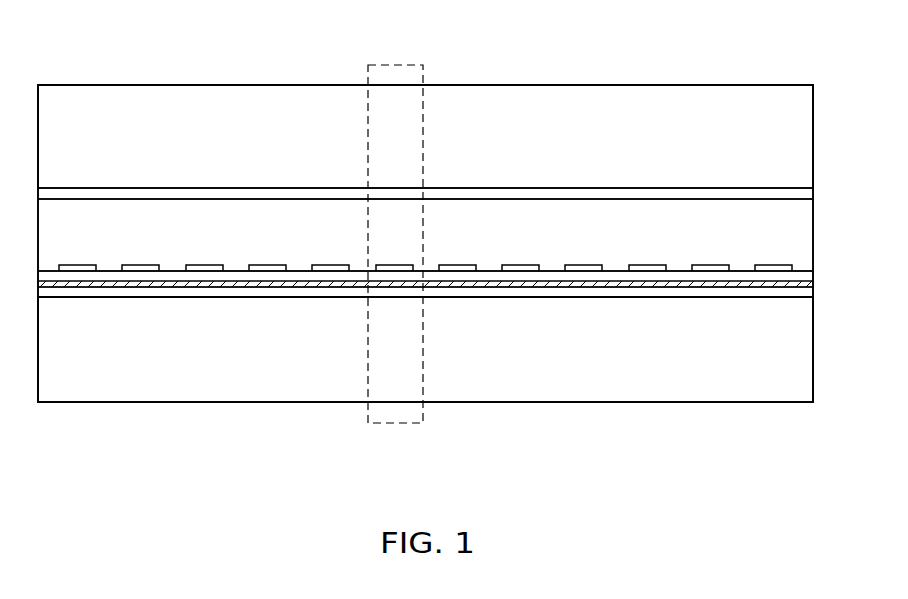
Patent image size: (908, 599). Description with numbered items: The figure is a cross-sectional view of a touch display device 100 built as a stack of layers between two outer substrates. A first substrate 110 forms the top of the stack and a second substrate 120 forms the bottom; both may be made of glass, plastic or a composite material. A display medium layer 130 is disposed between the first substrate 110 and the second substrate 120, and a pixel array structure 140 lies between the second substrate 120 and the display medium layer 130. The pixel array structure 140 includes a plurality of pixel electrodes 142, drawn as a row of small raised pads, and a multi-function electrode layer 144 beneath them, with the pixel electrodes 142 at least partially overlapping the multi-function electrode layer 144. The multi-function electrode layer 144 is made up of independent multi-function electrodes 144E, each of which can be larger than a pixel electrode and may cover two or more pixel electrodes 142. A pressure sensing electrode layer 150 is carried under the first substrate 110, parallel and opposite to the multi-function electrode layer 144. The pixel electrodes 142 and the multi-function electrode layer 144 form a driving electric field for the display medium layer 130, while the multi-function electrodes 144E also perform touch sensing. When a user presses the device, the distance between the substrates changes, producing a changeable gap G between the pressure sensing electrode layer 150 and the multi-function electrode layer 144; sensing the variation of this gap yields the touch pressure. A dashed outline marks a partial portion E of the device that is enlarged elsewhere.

The touch display device 100 is at (873, 457).
The first substrate 110 is at (809, 144).
The second substrate 120 is at (809, 368).
The display medium layer 130 is at (809, 235).
The pixel array structure 140 is at (820, 265).
The pixel electrodes 142 is at (793, 265).
The multi-function electrode layer 144 is at (454, 314).
The multi-function electrodes 144E is at (790, 288).
The pressure sensing electrode layer 150 is at (809, 193).
The partial portion E is at (402, 62).
The changeable gap G is at (681, 199).